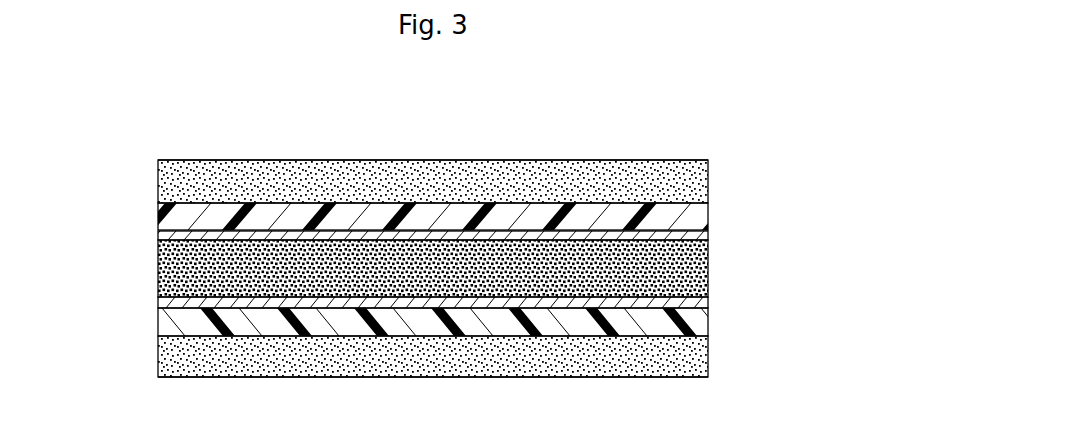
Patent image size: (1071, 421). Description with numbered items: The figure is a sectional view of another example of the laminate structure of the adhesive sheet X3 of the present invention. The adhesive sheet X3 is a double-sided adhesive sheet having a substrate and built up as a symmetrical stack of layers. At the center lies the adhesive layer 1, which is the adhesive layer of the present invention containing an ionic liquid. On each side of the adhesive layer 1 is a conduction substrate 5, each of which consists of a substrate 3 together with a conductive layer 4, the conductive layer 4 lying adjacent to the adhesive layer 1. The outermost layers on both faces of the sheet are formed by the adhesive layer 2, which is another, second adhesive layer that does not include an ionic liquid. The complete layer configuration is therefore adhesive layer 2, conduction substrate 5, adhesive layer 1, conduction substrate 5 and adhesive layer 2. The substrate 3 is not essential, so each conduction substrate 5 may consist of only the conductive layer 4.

The adhesive sheet X3 is at (277, 149).
The adhesive layer 1 is at (706, 268).
The adhesive layer 2 is at (165, 179).
The substrate 3 is at (707, 210).
The conductive layer 4 is at (431, 255).
The conduction substrate 5 is at (434, 243).